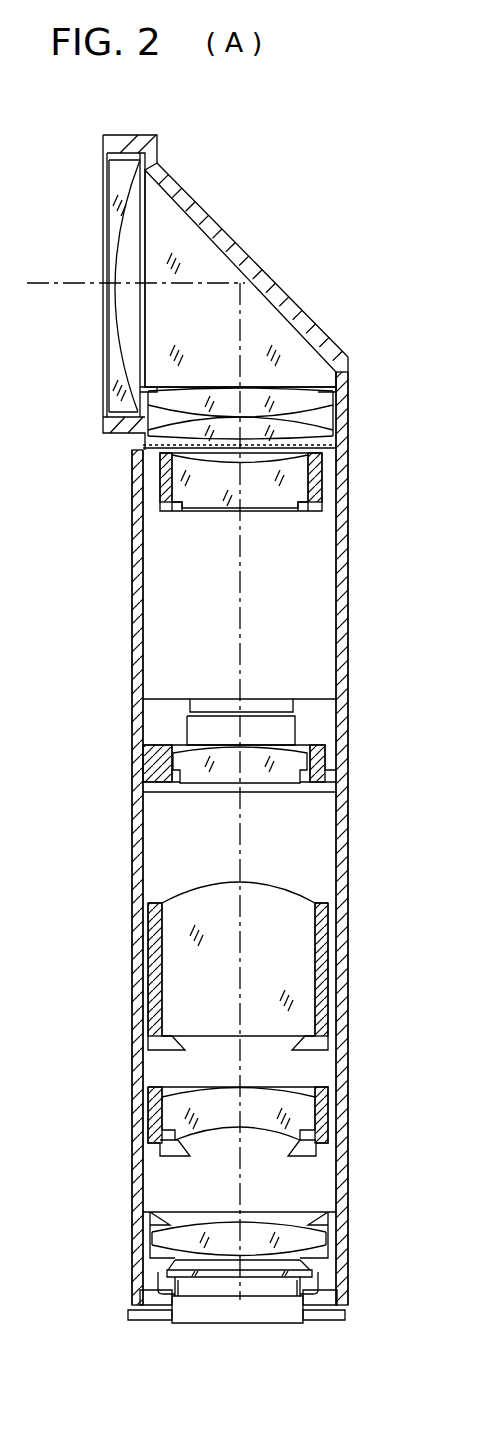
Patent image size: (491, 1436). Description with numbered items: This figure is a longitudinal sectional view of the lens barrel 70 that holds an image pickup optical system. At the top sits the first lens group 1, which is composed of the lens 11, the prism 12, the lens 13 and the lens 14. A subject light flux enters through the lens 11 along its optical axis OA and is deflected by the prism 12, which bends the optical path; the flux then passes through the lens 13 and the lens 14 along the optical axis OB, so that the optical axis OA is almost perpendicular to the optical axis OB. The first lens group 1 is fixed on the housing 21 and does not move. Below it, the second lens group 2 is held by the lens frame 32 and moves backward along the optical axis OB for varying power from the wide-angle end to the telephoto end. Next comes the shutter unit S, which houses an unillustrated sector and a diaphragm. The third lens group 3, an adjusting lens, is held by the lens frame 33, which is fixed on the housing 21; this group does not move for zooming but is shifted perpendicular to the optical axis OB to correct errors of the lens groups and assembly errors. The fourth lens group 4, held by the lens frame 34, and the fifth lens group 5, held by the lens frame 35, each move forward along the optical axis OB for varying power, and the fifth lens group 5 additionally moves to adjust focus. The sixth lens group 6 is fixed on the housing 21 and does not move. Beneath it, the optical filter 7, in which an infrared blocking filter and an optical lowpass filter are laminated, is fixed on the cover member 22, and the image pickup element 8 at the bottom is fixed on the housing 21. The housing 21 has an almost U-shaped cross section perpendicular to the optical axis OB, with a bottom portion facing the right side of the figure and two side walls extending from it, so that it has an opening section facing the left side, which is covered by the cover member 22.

The first lens group 1 is at (235, 288).
The lens 11 is at (117, 167).
The prism 12 is at (200, 258).
The lens 13 is at (249, 400).
The lens 14 is at (249, 349).
The second lens group 2 is at (267, 506).
The third lens group 3 is at (262, 765).
The fourth lens group 4 is at (272, 900).
The fifth lens group 5 is at (265, 1097).
The sixth lens group 6 is at (248, 1232).
The optical filter 7 is at (300, 1272).
The image pickup element 8 is at (250, 1312).
The housing 21 is at (352, 413).
The cover member 22 is at (132, 576).
The lens frame 32 is at (322, 494).
The lens frame 33 is at (322, 774).
The lens frame 34 is at (328, 971).
The lens frame 35 is at (328, 1120).
The lens barrel 70 is at (250, 787).
The shutter unit S is at (322, 725).
The optical axis OA is at (52, 283).
The optical axis OB is at (244, 615).